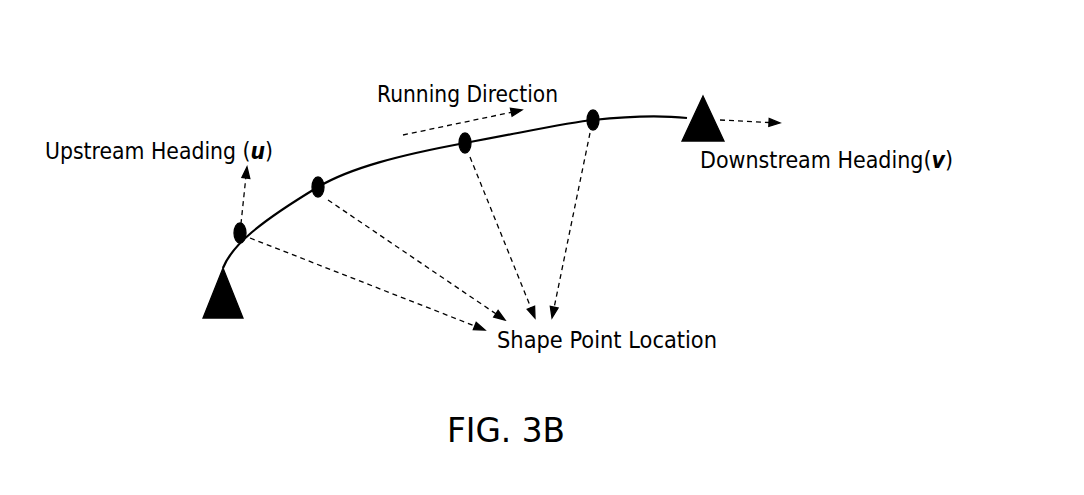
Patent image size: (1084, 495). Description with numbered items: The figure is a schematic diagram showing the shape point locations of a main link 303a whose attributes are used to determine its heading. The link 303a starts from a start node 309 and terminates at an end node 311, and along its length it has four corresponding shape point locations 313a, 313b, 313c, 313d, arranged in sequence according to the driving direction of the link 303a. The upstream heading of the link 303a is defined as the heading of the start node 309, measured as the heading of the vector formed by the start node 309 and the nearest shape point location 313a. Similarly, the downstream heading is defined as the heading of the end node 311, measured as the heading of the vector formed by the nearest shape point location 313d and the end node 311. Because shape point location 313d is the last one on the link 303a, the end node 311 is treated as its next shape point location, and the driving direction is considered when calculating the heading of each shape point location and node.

The main link 303a is at (363, 170).
The start node 309 is at (207, 296).
The end node 311 is at (703, 97).
The shape point location 313a is at (233, 233).
The shape point location 313b is at (318, 178).
The shape point location 313c is at (470, 145).
The shape point location 313d is at (592, 110).